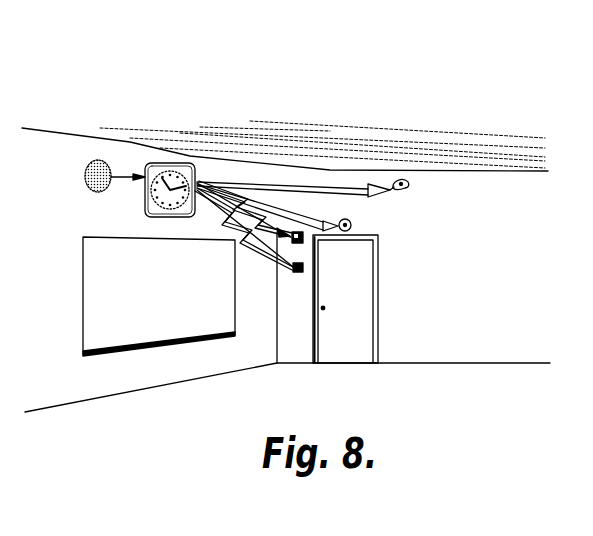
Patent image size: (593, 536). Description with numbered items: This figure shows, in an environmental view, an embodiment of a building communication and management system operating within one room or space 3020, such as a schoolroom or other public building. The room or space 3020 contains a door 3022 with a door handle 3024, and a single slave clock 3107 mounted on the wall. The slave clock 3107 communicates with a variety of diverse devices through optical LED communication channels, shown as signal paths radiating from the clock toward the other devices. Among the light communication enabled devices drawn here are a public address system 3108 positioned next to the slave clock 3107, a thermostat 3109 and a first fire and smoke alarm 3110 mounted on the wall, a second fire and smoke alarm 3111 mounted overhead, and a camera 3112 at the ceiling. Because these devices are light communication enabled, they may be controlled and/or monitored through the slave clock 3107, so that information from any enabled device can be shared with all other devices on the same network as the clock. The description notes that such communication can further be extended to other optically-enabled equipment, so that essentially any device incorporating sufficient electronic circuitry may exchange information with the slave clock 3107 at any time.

The room or space 3020 is at (546, 288).
The door 3022 is at (381, 363).
The door handle 3024 is at (323, 310).
The slave clock 3107 is at (157, 165).
The public address system 3108 is at (94, 160).
The thermostat 3109 is at (297, 264).
The fire and smoke alarm 3110 is at (293, 236).
The fire and smoke alarm 3111 is at (350, 220).
The camera 3112 is at (405, 180).